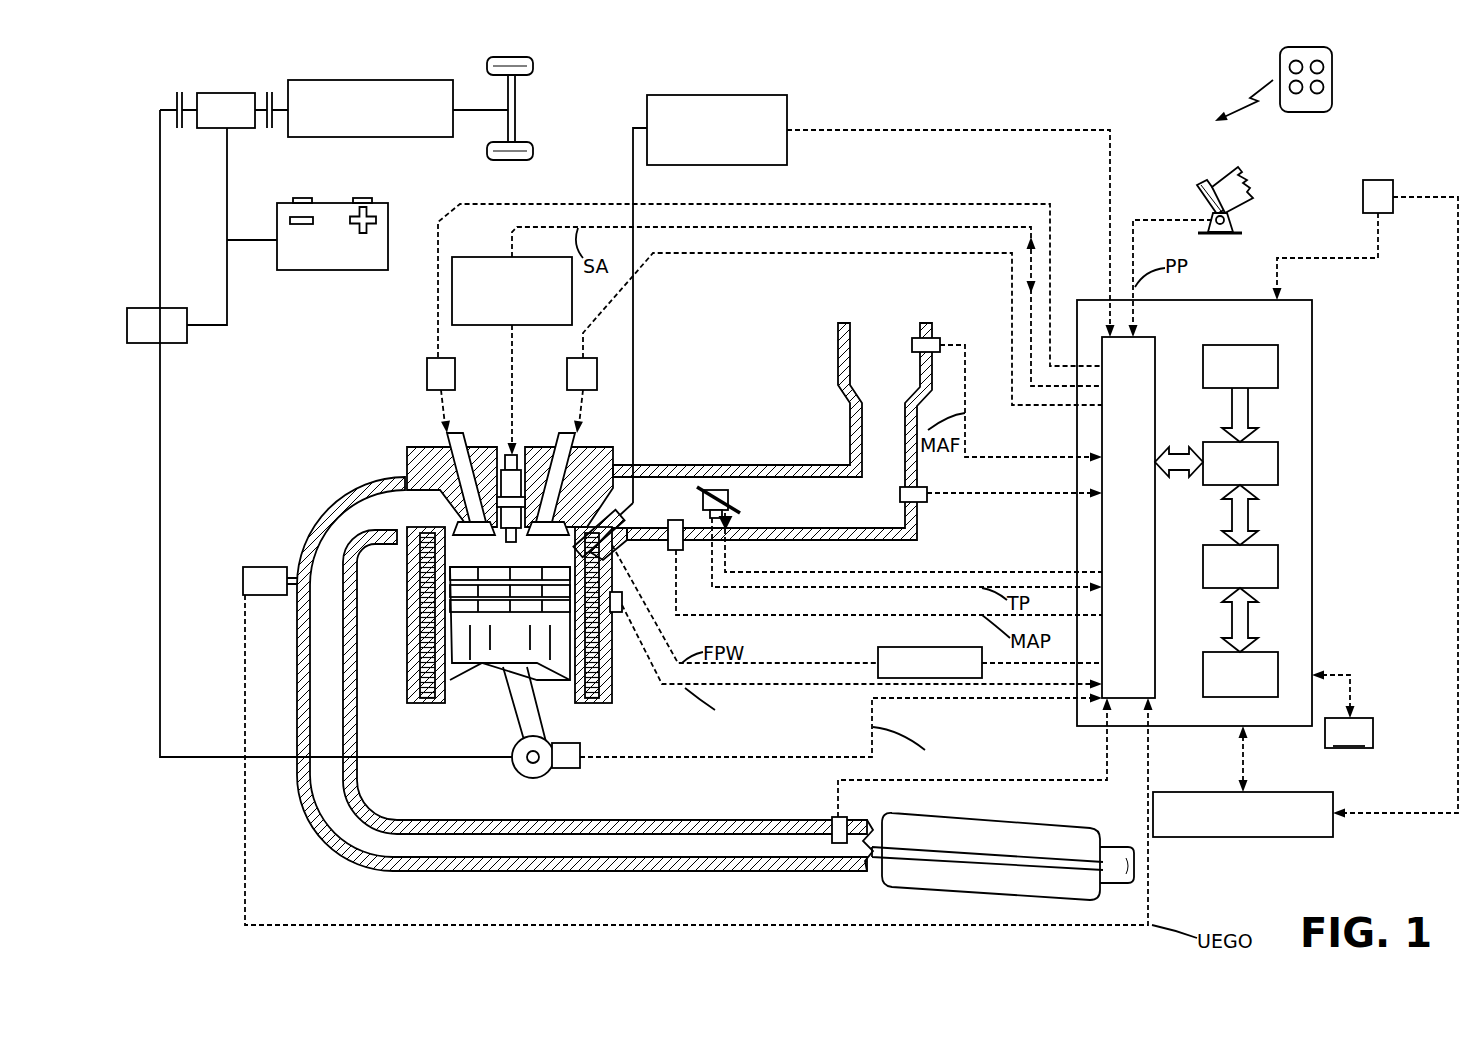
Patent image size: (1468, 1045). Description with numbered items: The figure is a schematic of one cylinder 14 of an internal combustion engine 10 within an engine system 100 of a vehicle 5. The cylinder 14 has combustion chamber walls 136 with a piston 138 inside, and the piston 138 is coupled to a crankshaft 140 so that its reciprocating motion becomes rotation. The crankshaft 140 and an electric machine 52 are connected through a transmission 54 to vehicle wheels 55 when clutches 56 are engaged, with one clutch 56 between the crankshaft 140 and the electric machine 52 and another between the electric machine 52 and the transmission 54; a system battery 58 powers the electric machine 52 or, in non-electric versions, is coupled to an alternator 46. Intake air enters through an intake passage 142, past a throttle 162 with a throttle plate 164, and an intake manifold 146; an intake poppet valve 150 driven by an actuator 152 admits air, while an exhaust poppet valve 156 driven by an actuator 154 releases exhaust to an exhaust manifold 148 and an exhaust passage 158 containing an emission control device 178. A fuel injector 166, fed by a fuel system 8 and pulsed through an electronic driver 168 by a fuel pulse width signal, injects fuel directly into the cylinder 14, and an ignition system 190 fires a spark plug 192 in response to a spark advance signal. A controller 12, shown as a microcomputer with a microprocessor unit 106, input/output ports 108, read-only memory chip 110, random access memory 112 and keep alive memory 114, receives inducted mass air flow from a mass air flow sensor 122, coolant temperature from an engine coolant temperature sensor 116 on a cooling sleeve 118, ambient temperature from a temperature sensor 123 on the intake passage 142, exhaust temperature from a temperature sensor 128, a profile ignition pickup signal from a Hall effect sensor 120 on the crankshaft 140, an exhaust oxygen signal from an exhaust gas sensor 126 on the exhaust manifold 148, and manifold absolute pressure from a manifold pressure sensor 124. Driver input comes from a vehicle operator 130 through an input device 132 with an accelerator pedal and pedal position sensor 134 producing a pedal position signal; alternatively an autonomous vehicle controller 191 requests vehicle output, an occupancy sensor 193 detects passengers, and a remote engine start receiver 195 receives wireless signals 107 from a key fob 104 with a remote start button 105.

The vehicle 5 is at (1362, 123).
The fuel system 8 is at (755, 95).
The internal combustion engine 10 is at (682, 540).
The controller 12 is at (1238, 500).
The cylinder 14 is at (412, 570).
The alternator 46 is at (127, 338).
The electric machine 52 is at (230, 93).
The transmission 54 is at (430, 137).
The vehicle wheel 55 is at (520, 162).
The clutch 56 is at (177, 97).
The system battery 58 is at (328, 270).
The engine system 100 is at (783, 306).
The key fob 104 is at (1310, 71).
The remote start button 105 is at (1330, 62).
The microprocessor unit 106 is at (1278, 460).
The wireless signals 107 is at (1248, 92).
The input/output ports 108 is at (1158, 345).
The read-only memory chip 110 is at (1278, 365).
The random access memory 112 is at (1278, 565).
The keep alive memory 114 is at (1278, 670).
The engine coolant temperature sensor 116 is at (618, 613).
The cooling sleeve 118 is at (603, 655).
The Hall effect sensor 120 is at (568, 770).
The mass air flow sensor 122 is at (930, 338).
The temperature sensor 123 is at (927, 500).
The MAP sensor 124 is at (682, 555).
The exhaust gas sensor 126 is at (243, 572).
The temperature sensor 128 is at (838, 817).
The vehicle operator 130 is at (1241, 243).
The input device 132 is at (1200, 188).
The pedal position sensor 134 is at (1242, 220).
The combustion chamber walls 136 is at (438, 705).
The piston 138 is at (500, 690).
The crankshaft 140 is at (523, 770).
The intake passage 142 is at (902, 376).
The intake manifold 146 is at (772, 431).
The exhaust manifold 148 is at (395, 524).
The intake poppet valve 150 is at (535, 518).
The actuator 152 is at (567, 360).
The actuator 154 is at (426, 358).
The exhaust poppet valve 156 is at (418, 485).
The exhaust passage 158 is at (585, 694).
The throttle 162 is at (722, 490).
The throttle plate 164 is at (700, 487).
The fuel injector 166 is at (580, 527).
The electronic driver 168 is at (878, 650).
The emission control device 178 is at (1060, 815).
The ignition system 190 is at (457, 257).
The autonomous vehicle controller 191 is at (1300, 792).
The spark plug 192 is at (505, 478).
The occupancy sensor 193 is at (1385, 180).
The remote engine start receiver 195 is at (1342, 710).